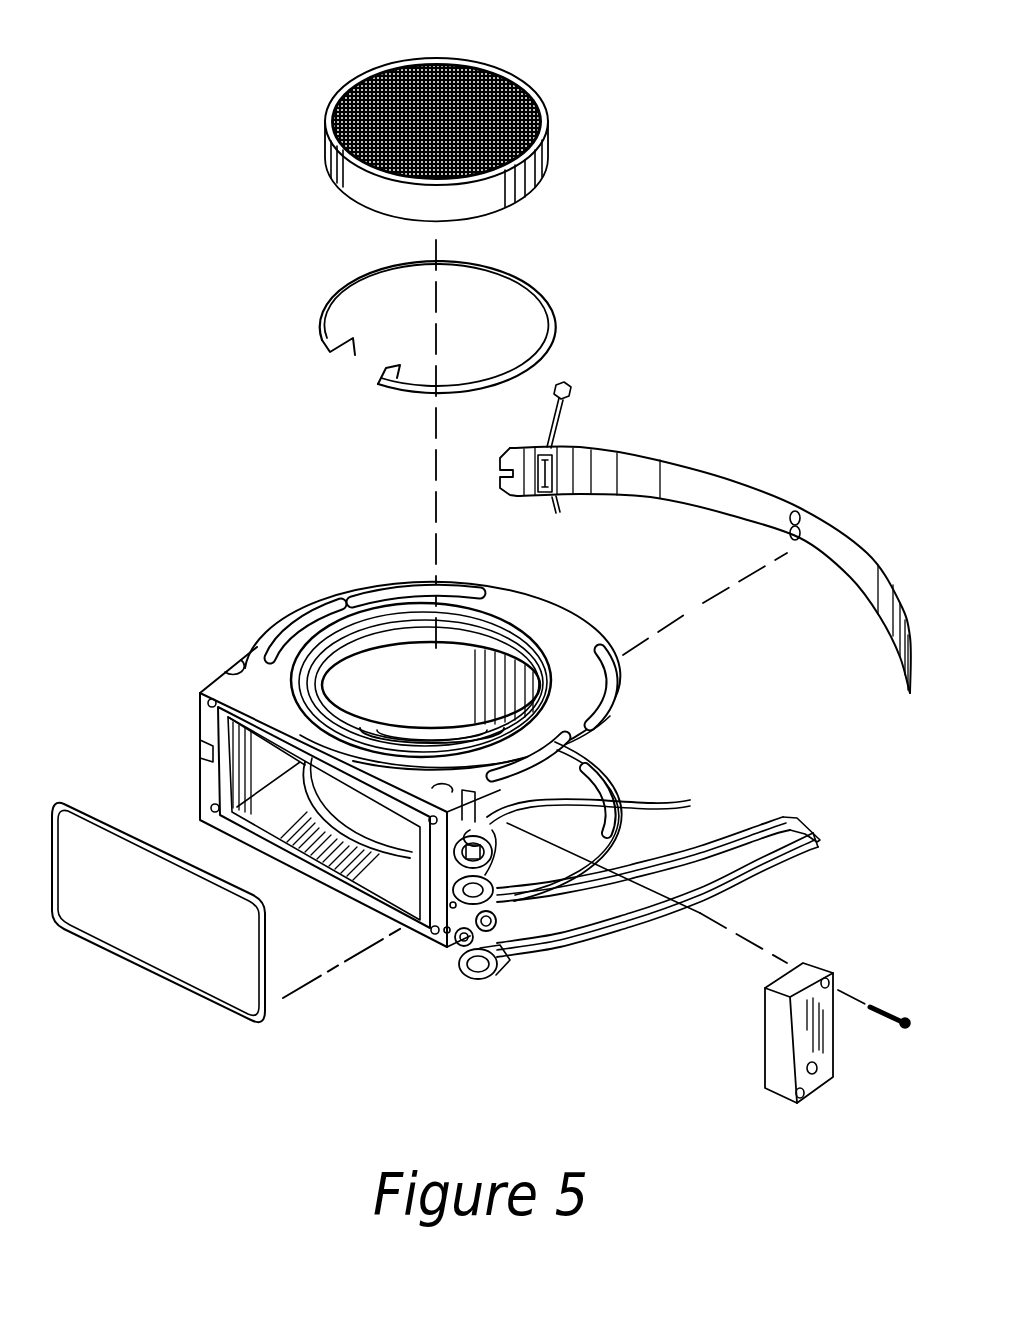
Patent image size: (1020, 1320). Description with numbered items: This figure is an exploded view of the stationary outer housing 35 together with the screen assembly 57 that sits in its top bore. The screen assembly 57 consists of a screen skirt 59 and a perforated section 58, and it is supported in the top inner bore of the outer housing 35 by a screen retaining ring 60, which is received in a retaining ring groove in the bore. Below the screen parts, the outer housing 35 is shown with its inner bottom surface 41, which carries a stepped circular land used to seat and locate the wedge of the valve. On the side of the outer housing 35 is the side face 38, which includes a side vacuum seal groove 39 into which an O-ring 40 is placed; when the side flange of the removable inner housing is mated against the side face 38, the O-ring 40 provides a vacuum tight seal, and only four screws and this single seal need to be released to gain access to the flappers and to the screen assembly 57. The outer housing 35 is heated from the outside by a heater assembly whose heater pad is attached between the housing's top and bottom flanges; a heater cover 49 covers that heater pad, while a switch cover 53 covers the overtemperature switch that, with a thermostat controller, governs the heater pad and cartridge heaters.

The stationary outer housing 35 is at (478, 788).
The side face 38 is at (418, 905).
The side vacuum seal groove 39 is at (337, 867).
The O-ring 40 is at (196, 1000).
The inner bottom surface 41 is at (290, 865).
The heater cover 49 is at (758, 461).
The switch cover 53 is at (777, 1047).
The screen assembly 57 is at (481, 112).
The perforated section 58 is at (476, 62).
The screen skirt 59 is at (325, 150).
The screen retaining ring 60 is at (350, 288).